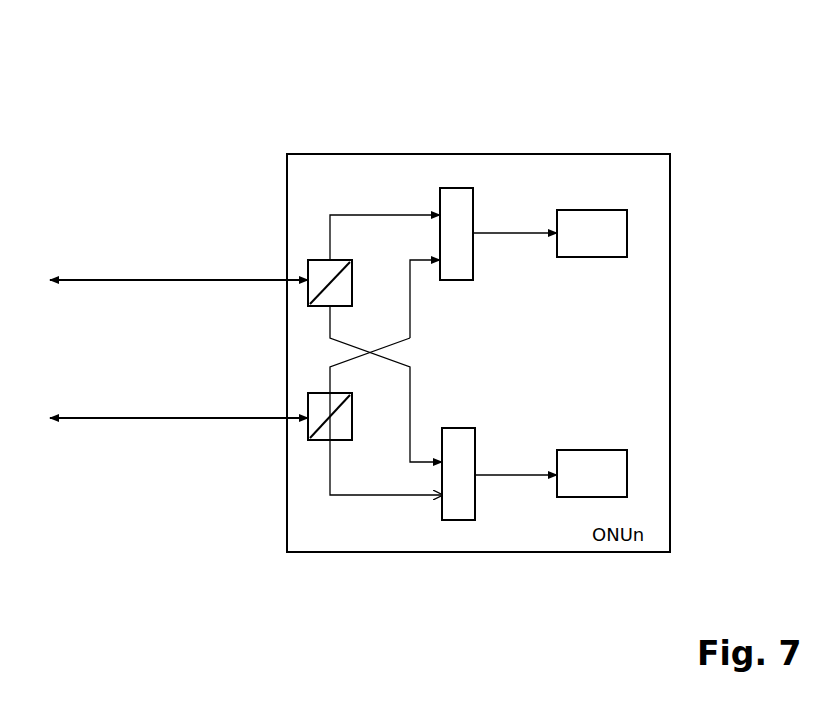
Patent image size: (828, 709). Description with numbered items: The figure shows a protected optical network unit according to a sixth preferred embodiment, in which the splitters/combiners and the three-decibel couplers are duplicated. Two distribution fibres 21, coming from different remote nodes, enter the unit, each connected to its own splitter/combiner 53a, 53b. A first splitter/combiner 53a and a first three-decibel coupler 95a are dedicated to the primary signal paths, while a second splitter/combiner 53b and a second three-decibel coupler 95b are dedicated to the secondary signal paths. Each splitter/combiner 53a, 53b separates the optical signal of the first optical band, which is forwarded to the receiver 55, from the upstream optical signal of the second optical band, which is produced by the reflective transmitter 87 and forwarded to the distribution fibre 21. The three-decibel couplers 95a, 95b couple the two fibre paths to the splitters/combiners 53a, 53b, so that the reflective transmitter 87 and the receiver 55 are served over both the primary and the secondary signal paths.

The distribution fibre 21 is at (83, 277).
The splitter/combiner 53a is at (330, 268).
The splitter/combiner 53b is at (312, 395).
The 3 dB-coupler 95a is at (466, 192).
The 3 dB-coupler 95b is at (460, 513).
The reflective transmitter 87 is at (592, 222).
The receiver 55 is at (567, 457).